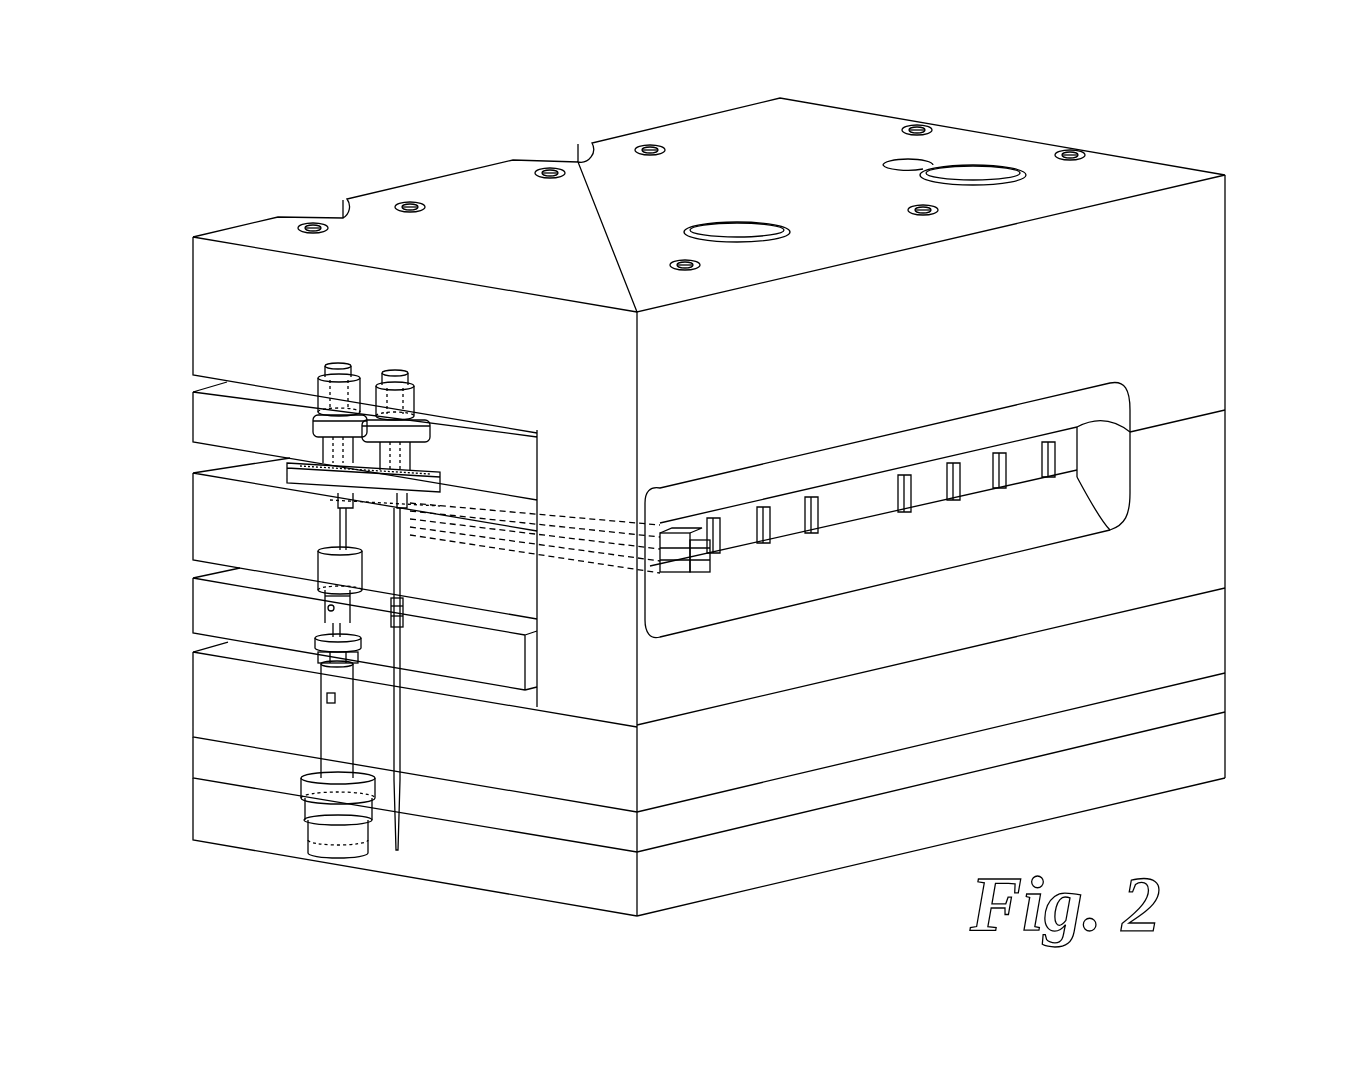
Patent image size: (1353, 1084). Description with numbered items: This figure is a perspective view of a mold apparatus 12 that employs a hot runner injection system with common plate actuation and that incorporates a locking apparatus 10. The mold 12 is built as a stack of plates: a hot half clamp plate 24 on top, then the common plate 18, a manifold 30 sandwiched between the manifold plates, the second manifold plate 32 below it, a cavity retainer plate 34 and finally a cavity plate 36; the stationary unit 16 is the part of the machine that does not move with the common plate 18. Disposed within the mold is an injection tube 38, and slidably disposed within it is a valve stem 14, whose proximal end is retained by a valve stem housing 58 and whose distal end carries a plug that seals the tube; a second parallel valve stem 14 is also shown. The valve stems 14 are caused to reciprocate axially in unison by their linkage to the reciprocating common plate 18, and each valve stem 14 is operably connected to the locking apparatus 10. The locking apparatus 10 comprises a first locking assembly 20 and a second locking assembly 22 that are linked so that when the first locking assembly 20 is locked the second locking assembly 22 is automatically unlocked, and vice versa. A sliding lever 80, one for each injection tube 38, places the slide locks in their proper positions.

The mold apparatus 12 is at (1240, 278).
The hot half clamp plate 24 is at (192, 323).
The common plate 18 is at (192, 418).
The stationary unit 16 is at (192, 522).
The manifold 30 is at (192, 605).
The second manifold plate 32 is at (192, 692).
The cavity retainer plate 34 is at (192, 756).
The cavity plate 36 is at (192, 804).
The locking apparatus 10 is at (432, 452).
The first locking assembly 20 is at (306, 425).
The valve stem housing 58 is at (320, 444).
The second locking assembly 22 is at (452, 472).
The valve stem 14 is at (335, 535).
The injection tube 38 is at (318, 722).
The sliding lever 80 is at (708, 575).